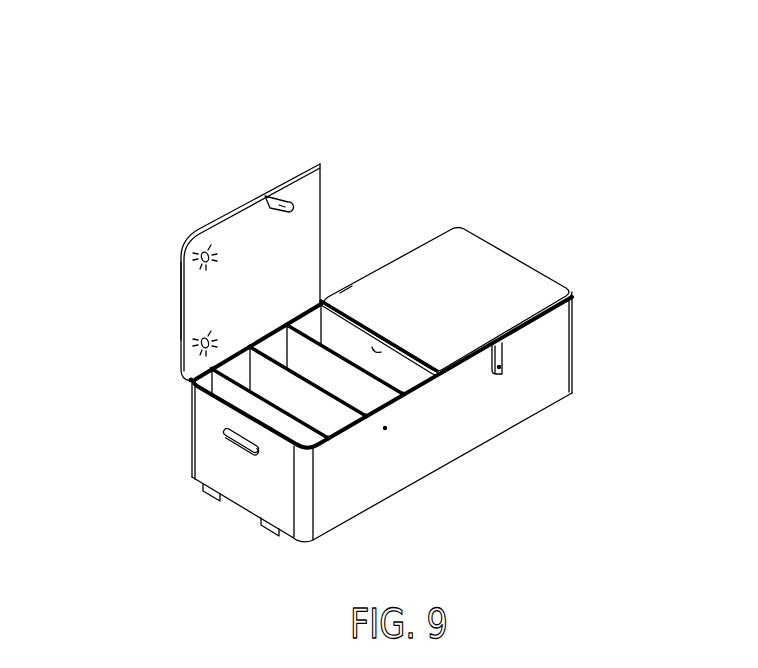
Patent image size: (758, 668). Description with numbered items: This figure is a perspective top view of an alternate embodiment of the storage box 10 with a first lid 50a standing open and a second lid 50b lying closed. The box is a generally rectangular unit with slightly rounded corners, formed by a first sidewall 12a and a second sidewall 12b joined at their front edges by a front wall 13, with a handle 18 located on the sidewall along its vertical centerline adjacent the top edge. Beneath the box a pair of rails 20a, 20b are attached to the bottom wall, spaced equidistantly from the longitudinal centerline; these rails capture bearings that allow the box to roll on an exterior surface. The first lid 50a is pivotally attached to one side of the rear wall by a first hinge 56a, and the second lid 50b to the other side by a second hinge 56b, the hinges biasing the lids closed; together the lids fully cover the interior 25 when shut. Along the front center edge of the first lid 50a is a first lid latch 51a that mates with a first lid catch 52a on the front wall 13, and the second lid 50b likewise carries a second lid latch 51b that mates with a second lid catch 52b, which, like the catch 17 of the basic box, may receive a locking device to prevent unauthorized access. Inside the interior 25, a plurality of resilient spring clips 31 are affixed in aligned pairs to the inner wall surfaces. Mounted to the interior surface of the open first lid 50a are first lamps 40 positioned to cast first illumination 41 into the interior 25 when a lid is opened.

The storage box 10 is at (152, 156).
The first sidewall 12a is at (202, 430).
The second sidewall 12b is at (575, 320).
The front wall 13 is at (510, 398).
The catch 17 is at (440, 398).
The handle 18 is at (233, 436).
The first rail 20a is at (213, 497).
The second rail 20b is at (275, 533).
The interior 25 is at (375, 348).
The clip 31 is at (249, 346).
The first lamp 40 is at (197, 253).
The first illumination 41 is at (190, 262).
The first lid 50a is at (232, 238).
The second lid 50b is at (447, 262).
The first lid latch 51a is at (280, 194).
The second lid latch 51b is at (503, 352).
The first lid catch 52a is at (385, 430).
The second lid catch 52b is at (504, 368).
The first hinge 56a is at (190, 376).
The second hinge 56b is at (351, 288).